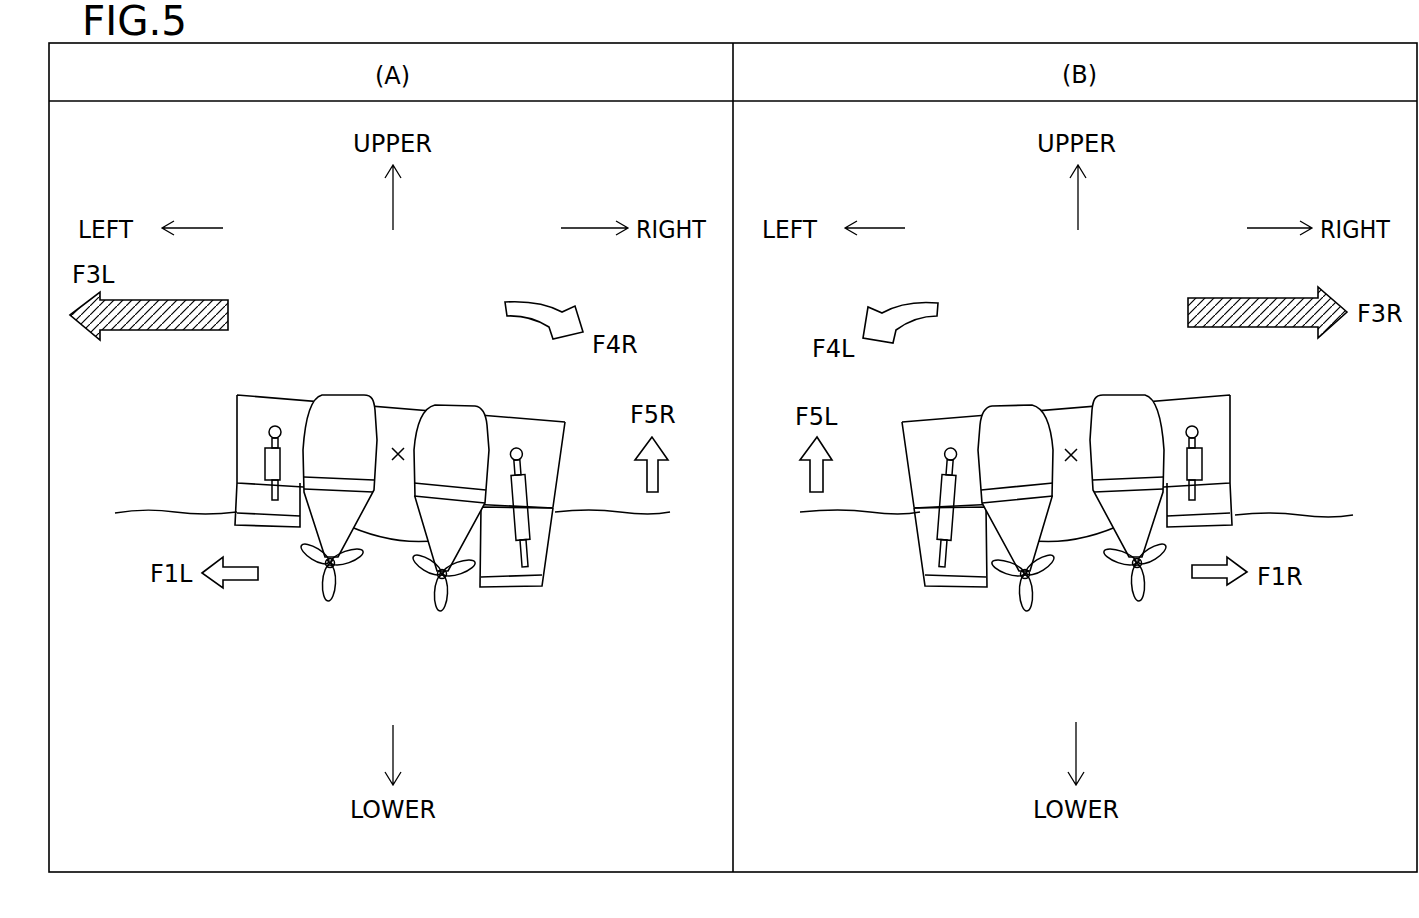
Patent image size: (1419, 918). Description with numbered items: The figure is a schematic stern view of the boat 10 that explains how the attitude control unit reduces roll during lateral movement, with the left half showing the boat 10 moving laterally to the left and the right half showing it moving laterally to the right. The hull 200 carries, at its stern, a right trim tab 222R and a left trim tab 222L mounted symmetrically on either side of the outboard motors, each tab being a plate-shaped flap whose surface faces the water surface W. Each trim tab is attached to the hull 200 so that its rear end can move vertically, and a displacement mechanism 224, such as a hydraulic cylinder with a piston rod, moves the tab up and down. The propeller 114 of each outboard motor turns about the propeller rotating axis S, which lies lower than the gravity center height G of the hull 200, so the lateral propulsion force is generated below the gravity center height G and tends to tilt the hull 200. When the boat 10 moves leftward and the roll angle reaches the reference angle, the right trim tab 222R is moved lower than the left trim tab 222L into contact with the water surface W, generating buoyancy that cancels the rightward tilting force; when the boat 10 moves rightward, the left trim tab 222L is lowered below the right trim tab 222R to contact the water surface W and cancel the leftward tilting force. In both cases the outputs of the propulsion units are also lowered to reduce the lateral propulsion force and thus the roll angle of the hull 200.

The boat 10 is at (397, 354).
The hull 200 is at (288, 398).
The left trim tab 222L is at (248, 503).
The right trim tab 222R is at (528, 561).
The displacement mechanism 224 is at (266, 462).
The propeller 114 is at (316, 567).
The propeller rotating axis S is at (334, 593).
The gravity center height G is at (398, 448).
The water surface W is at (130, 512).